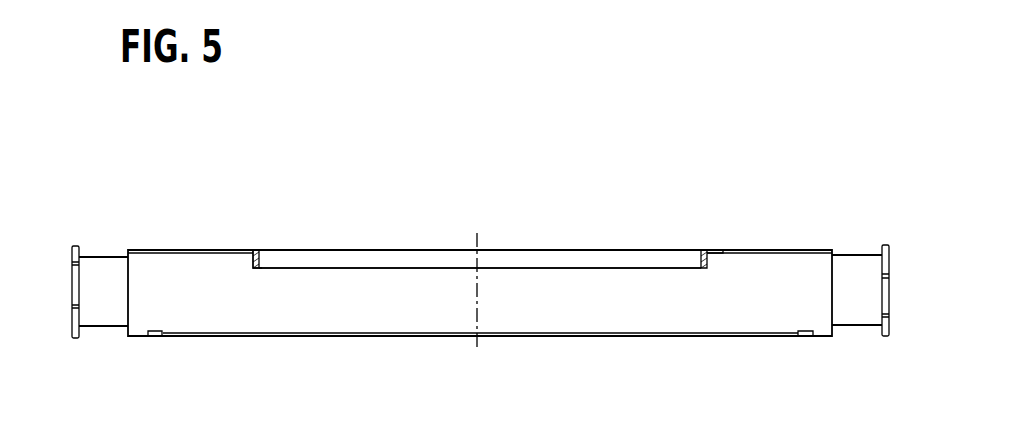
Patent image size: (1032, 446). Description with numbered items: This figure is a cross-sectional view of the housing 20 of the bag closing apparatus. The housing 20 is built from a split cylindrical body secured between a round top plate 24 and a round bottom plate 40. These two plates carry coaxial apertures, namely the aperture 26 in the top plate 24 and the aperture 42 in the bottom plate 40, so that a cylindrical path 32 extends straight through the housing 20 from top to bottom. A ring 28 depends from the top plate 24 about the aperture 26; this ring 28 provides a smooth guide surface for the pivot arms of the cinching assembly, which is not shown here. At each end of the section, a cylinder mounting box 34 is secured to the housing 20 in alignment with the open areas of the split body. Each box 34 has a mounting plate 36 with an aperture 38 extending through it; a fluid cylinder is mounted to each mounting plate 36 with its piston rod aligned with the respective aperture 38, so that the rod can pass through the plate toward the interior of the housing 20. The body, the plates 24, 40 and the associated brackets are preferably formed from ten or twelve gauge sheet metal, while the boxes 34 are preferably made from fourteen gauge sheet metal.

The housing 20 is at (166, 202).
The top plate 24 is at (733, 248).
The aperture 26 is at (553, 240).
The ring 28 is at (270, 250).
The cylindrical path 32 is at (408, 232).
The cylinder mounting box 34 is at (106, 344).
The mounting plate 36 is at (72, 338).
The aperture 38 is at (70, 292).
The bottom plate 40 is at (805, 336).
The aperture 42 is at (584, 340).